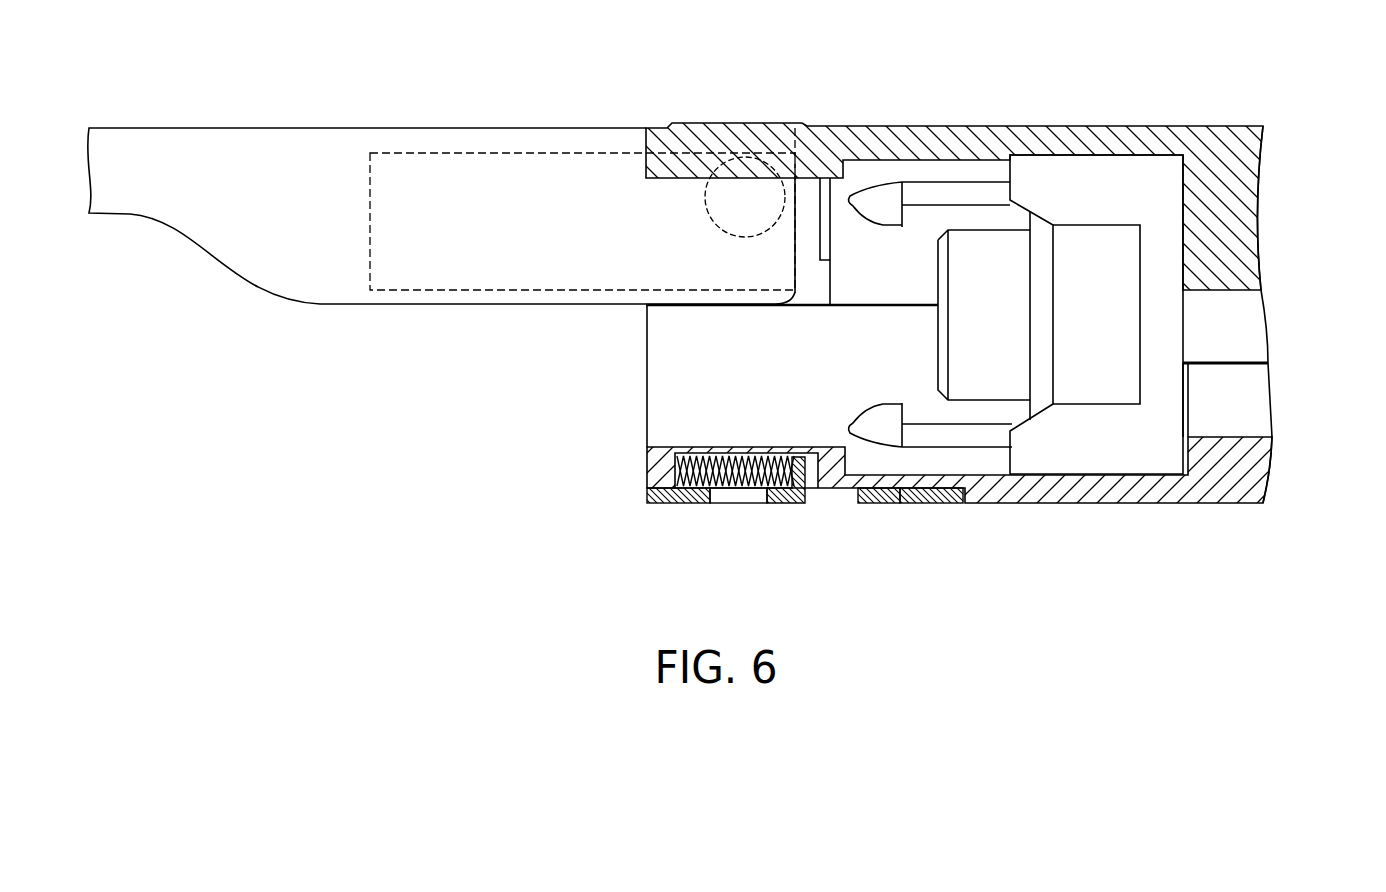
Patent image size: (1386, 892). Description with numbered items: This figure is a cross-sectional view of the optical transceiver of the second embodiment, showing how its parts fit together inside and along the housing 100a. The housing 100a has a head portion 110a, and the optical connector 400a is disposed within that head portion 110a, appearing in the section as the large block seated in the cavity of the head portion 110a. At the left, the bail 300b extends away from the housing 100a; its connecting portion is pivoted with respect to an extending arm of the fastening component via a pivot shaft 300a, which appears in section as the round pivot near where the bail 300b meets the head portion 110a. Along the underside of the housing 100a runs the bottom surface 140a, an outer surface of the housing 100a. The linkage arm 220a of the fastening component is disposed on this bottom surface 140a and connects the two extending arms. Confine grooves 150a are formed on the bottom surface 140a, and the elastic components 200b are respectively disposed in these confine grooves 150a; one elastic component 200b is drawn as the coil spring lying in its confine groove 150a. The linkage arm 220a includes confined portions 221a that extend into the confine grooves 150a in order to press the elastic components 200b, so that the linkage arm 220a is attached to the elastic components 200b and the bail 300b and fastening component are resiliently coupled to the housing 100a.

The housing 100a is at (1273, 123).
The head portion 110a is at (943, 138).
The bottom surface 140a is at (902, 494).
The confine grooves 150a is at (747, 453).
The elastic components 200b is at (723, 492).
The linkage arm 220a is at (932, 500).
The confined portions 221a is at (800, 490).
The pivot shafts 300a is at (705, 208).
The bail 300b is at (258, 147).
The optical connector 400a is at (1093, 187).